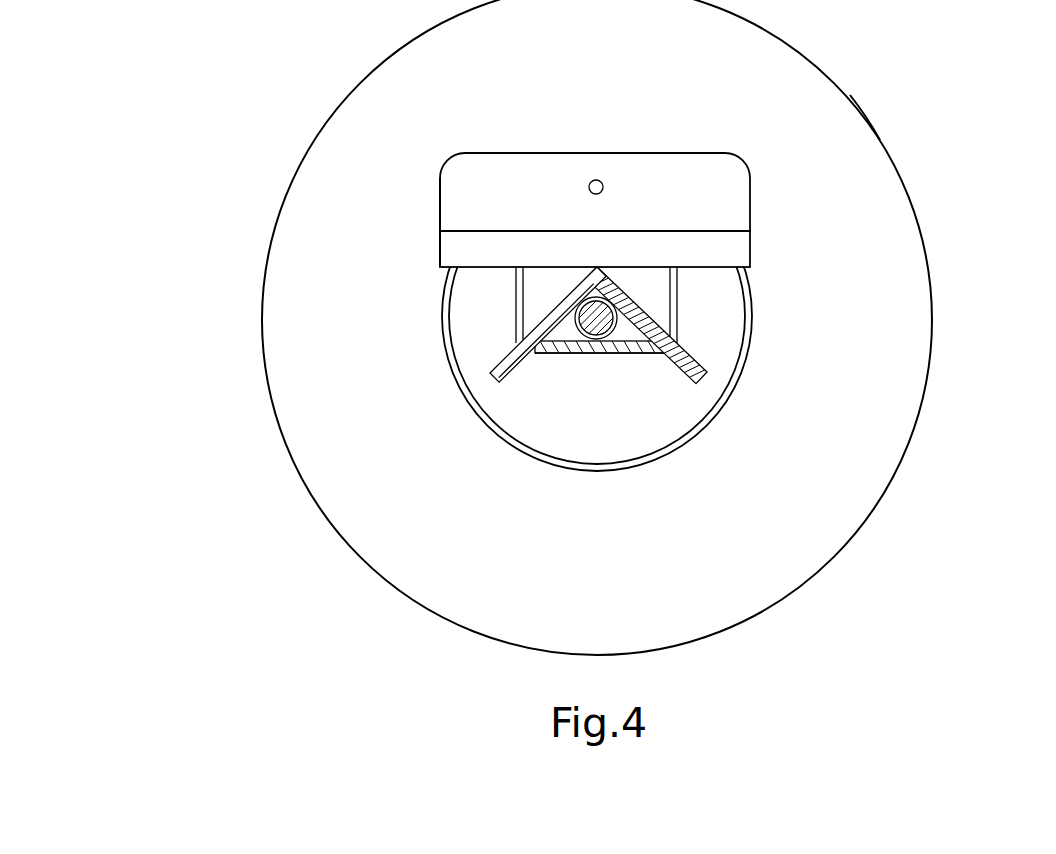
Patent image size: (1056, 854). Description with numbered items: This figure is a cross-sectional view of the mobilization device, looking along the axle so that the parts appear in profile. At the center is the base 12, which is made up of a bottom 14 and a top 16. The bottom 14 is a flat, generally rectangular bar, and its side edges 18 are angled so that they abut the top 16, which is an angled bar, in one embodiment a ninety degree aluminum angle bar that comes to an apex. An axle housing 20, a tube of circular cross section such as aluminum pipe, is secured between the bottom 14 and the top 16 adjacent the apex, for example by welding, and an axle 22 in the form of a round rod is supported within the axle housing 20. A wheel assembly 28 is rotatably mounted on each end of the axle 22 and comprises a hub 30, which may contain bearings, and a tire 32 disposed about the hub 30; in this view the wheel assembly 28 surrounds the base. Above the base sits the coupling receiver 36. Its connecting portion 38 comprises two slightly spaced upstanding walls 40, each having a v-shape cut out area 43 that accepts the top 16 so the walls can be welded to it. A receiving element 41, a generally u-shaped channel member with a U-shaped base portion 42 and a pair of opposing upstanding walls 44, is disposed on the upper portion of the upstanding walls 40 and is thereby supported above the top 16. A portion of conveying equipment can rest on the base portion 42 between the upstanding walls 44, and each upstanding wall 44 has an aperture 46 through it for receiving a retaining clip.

The base 12 is at (706, 367).
The bottom 14 is at (619, 357).
The top 16 is at (610, 276).
The side edges 18 is at (668, 332).
The axle housing 20 is at (596, 354).
The axle 22 is at (619, 301).
The wheel assembly 28 is at (908, 446).
The hub 30 is at (727, 393).
The tire 32 is at (868, 120).
The coupling receiver 36 is at (438, 249).
The connecting portion 38 is at (511, 328).
The upstanding walls 40 is at (438, 249).
The receiving element 41 is at (436, 207).
The U-shaped base portion 42 is at (535, 293).
The v-shape cut out area 43 is at (656, 314).
The upstanding walls 44 is at (647, 170).
The aperture 46 is at (601, 181).